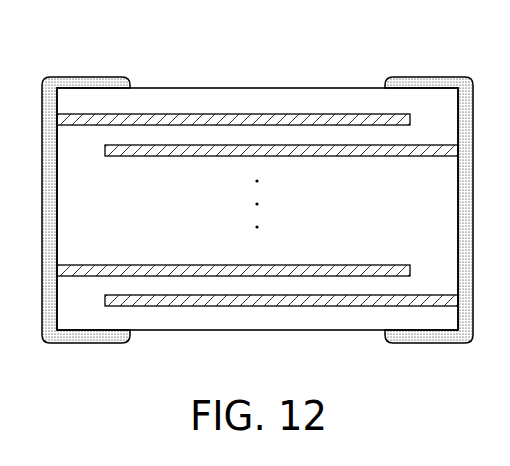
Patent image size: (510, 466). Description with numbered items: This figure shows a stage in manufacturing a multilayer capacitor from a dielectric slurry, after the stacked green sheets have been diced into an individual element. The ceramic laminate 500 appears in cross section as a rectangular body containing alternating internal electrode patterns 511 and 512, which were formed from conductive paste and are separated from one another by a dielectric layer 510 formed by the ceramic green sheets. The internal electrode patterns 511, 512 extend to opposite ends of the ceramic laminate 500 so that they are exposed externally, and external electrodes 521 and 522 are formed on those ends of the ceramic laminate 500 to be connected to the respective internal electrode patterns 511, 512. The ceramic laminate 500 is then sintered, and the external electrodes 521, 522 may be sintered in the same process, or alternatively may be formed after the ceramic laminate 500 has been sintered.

The ceramic laminate 500 is at (319, 82).
The dielectric layer 510 is at (223, 135).
The internal electrode pattern 511 is at (174, 113).
The internal electrode pattern 512 is at (285, 145).
The external electrode 521 is at (85, 77).
The external electrode 522 is at (432, 77).